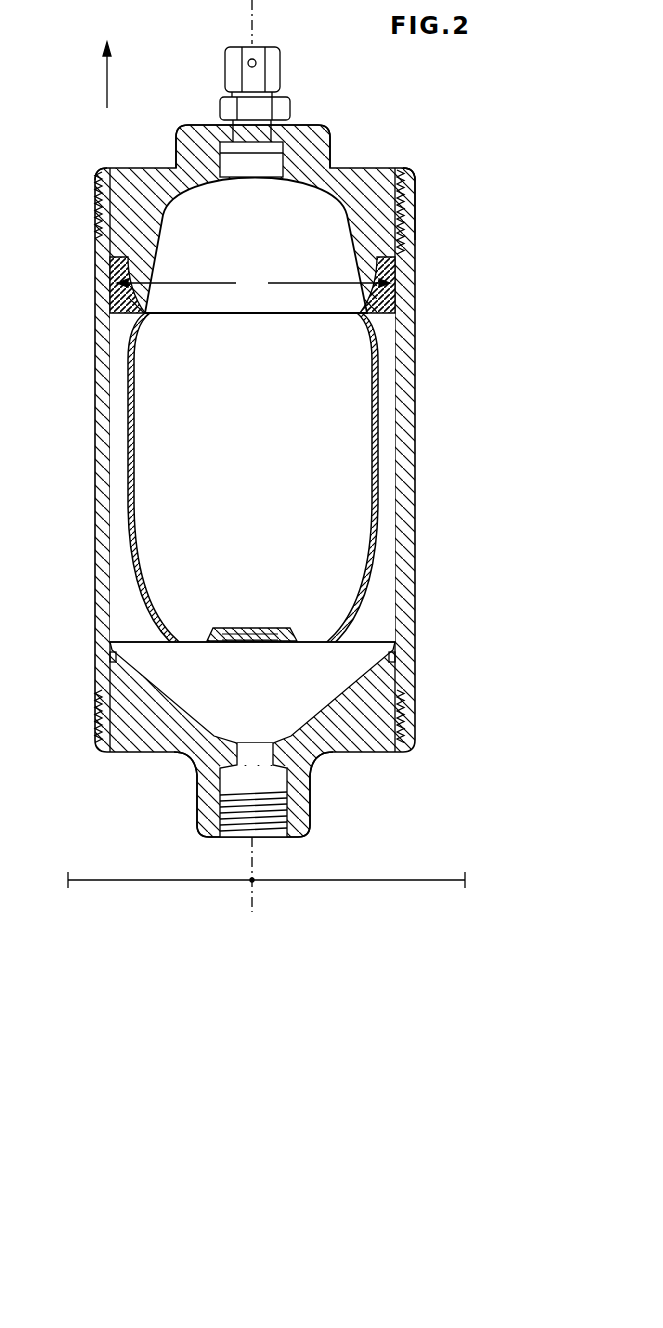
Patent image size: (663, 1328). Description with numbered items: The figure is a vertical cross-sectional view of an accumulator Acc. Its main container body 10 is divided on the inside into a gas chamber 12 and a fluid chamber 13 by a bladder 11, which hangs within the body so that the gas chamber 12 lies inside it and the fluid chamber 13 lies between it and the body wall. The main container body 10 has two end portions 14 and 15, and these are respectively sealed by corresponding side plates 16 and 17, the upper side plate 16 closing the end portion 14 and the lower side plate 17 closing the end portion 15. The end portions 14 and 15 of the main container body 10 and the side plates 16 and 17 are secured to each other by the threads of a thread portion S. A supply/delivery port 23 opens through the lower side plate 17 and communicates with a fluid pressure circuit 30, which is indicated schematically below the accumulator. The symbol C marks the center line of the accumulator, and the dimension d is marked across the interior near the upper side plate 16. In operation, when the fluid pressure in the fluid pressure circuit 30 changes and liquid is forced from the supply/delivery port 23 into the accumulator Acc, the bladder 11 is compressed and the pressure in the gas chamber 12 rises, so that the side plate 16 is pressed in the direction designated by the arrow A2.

The main container body 10 is at (415, 512).
The bladder 11 is at (378, 430).
The gas chamber 12 is at (355, 378).
The fluid chamber 13 is at (382, 565).
The end portion 14 is at (416, 199).
The end portion 15 is at (415, 722).
The side plate 16 is at (372, 178).
The side plate 17 is at (365, 750).
The supply/delivery port 23 is at (197, 812).
The fluid pressure circuit 30 is at (152, 883).
The thread portion S is at (400, 222).
The accumulator Acc is at (418, 345).
The arrow A2 is at (107, 88).
The center line C is at (254, 18).
The diameter d is at (253, 285).